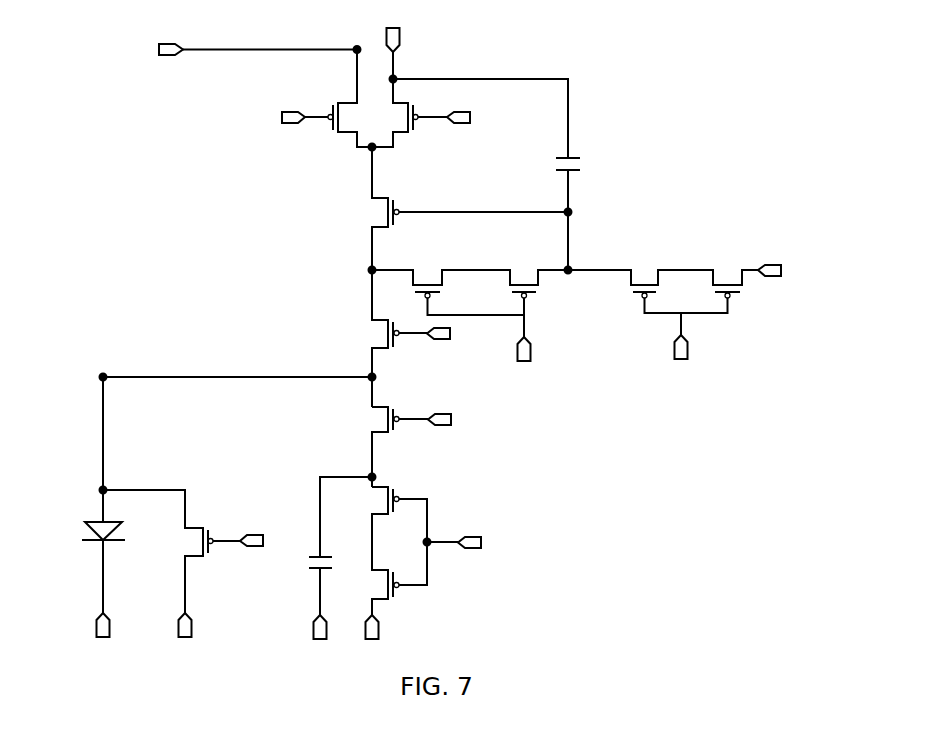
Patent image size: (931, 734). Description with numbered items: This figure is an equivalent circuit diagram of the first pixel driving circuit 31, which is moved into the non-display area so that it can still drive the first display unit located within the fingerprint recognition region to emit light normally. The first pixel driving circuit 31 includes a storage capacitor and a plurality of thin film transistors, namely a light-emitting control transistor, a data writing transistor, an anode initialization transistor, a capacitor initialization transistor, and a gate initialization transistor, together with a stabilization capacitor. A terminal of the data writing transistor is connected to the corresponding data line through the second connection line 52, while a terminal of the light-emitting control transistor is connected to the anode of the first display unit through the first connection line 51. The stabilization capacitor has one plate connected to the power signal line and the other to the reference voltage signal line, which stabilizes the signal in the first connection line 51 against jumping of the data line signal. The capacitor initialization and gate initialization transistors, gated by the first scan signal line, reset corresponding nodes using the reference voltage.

The first pixel driving circuit 31 is at (796, 60).
The first connection line 51 is at (237, 368).
The second connection line 52 is at (258, 42).